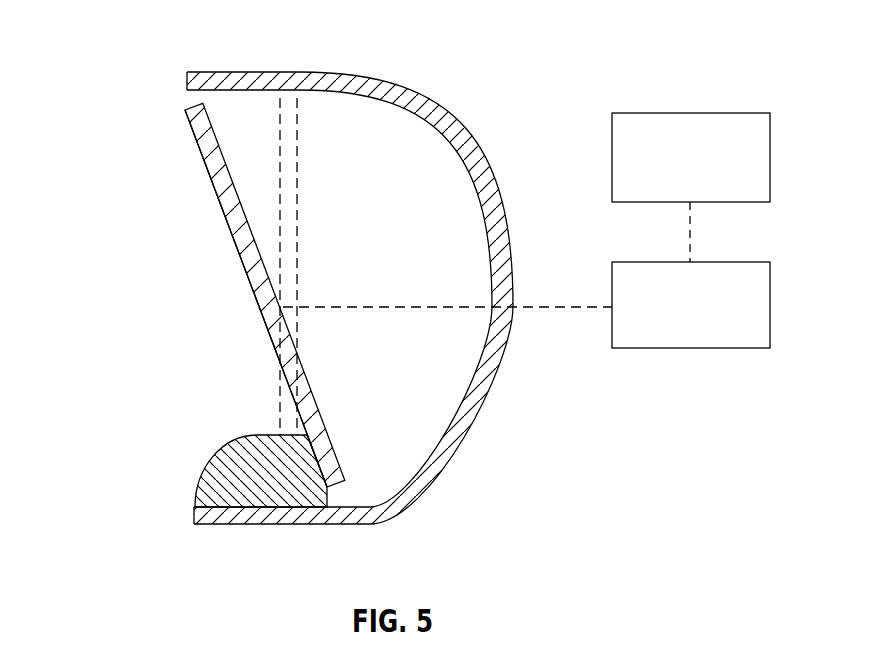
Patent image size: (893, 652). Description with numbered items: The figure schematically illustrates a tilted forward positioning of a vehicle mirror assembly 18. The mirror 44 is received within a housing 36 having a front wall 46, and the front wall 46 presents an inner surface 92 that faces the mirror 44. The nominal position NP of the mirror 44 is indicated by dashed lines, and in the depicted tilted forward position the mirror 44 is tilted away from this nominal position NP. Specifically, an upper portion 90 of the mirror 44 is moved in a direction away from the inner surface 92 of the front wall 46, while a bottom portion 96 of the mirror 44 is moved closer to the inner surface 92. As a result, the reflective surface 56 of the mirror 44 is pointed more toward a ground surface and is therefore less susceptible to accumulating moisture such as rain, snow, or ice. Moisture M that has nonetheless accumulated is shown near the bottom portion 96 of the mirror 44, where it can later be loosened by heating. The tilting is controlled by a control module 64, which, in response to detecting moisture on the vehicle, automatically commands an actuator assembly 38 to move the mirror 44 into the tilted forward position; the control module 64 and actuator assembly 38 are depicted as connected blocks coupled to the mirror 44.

The vehicle mirror assembly 18 is at (103, 38).
The housing 36 is at (385, 298).
The front wall 46 is at (513, 262).
The inner surface 92 is at (475, 193).
The upper portion 90 is at (231, 295).
The mirror 44 is at (238, 271).
The reflective surface 56 is at (262, 300).
The bottom portion 96 is at (259, 490).
The moisture M is at (232, 492).
The nominal position NP is at (295, 186).
The control module 64 is at (727, 113).
The actuator assembly 38 is at (727, 262).